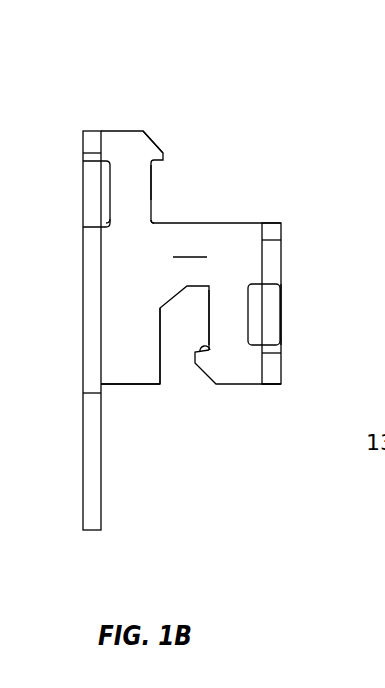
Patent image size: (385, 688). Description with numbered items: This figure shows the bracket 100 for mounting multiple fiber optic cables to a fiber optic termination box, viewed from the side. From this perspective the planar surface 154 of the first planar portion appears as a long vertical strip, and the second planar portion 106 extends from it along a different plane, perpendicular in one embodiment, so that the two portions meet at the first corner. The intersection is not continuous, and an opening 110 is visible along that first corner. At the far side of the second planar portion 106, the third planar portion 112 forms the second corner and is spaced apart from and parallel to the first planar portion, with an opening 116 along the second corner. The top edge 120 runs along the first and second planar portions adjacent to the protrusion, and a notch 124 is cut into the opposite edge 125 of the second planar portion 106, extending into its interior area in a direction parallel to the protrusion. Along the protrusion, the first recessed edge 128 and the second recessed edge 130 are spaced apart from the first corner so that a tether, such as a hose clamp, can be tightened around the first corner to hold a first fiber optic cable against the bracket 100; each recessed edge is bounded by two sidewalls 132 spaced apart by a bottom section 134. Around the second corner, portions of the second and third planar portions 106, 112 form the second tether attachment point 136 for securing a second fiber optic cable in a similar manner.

The bracket 100 is at (152, 82).
The second planar portion 106 is at (191, 257).
The opening 110 is at (107, 197).
The third planar portion 112 is at (273, 372).
The opening 116 is at (255, 323).
The top edge 120 is at (242, 220).
The notch 124 is at (182, 382).
The edge 125 is at (125, 387).
The first recessed edge 128 is at (88, 178).
The second recessed edge 130 is at (153, 192).
The sidewalls 132 is at (82, 163).
The bottom section 134 is at (160, 172).
The second tether attachment point 136 is at (297, 311).
The planar surface 154 is at (106, 505).